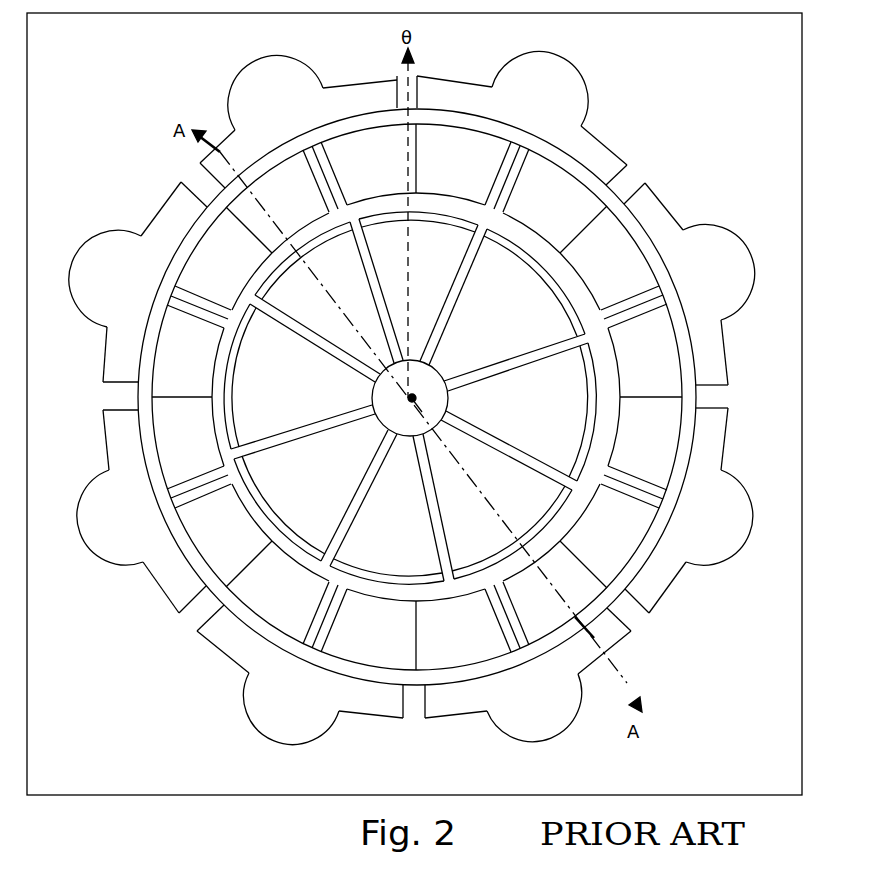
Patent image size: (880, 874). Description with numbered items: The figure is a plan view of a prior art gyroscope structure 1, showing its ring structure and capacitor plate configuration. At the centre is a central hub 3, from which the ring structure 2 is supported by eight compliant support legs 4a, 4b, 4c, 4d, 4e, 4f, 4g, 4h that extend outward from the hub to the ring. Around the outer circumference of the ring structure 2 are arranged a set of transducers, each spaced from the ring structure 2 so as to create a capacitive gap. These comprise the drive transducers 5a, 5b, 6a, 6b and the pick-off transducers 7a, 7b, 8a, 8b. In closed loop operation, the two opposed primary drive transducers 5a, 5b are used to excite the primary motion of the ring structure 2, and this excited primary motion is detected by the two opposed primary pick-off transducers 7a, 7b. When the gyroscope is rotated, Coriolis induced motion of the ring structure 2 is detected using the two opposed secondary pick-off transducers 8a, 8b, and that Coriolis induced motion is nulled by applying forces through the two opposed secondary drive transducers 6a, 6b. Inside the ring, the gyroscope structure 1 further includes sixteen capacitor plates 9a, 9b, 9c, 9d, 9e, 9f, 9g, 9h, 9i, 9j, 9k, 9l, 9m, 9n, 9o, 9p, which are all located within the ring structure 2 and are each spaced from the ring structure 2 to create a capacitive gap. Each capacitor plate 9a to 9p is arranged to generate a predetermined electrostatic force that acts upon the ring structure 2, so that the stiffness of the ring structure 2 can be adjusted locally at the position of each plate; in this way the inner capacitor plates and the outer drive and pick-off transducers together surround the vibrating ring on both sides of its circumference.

The gyroscope structure 1 is at (674, 144).
The ring structure 2 is at (379, 397).
The central hub 3 is at (431, 381).
The compliant support leg 4a is at (414, 287).
The compliant support leg 4b is at (502, 295).
The compliant support leg 4c is at (520, 407).
The compliant support leg 4d is at (509, 495).
The compliant support leg 4e is at (392, 509).
The compliant support leg 4f is at (315, 498).
The compliant support leg 4g is at (299, 381).
The compliant support leg 4h is at (315, 302).
The primary drive transducer 5a is at (241, 89).
The secondary drive transducer 6a is at (625, 86).
The primary pick-off transducer 7a is at (721, 246).
The secondary pick-off transducer 8a is at (721, 597).
The primary drive transducer 5b is at (573, 723).
The secondary drive transducer 6b is at (234, 722).
The primary pick-off transducer 7b is at (100, 563).
The secondary pick-off transducer 8b is at (99, 323).
The capacitor plate 9a is at (375, 178).
The capacitor plate 9b is at (460, 178).
The capacitor plate 9c is at (556, 220).
The capacitor plate 9d is at (609, 274).
The capacitor plate 9e is at (651, 381).
The capacitor plate 9f is at (651, 449).
The capacitor plate 9g is at (610, 556).
The capacitor plate 9h is at (541, 618).
The capacitor plate 9i is at (461, 646).
The capacitor plate 9j is at (391, 648).
The capacitor plate 9k is at (286, 609).
The capacitor plate 9l is at (230, 546).
The capacitor plate 9m is at (190, 454).
The capacitor plate 9n is at (188, 378).
The capacitor plate 9o is at (221, 279).
The capacitor plate 9p is at (291, 211).